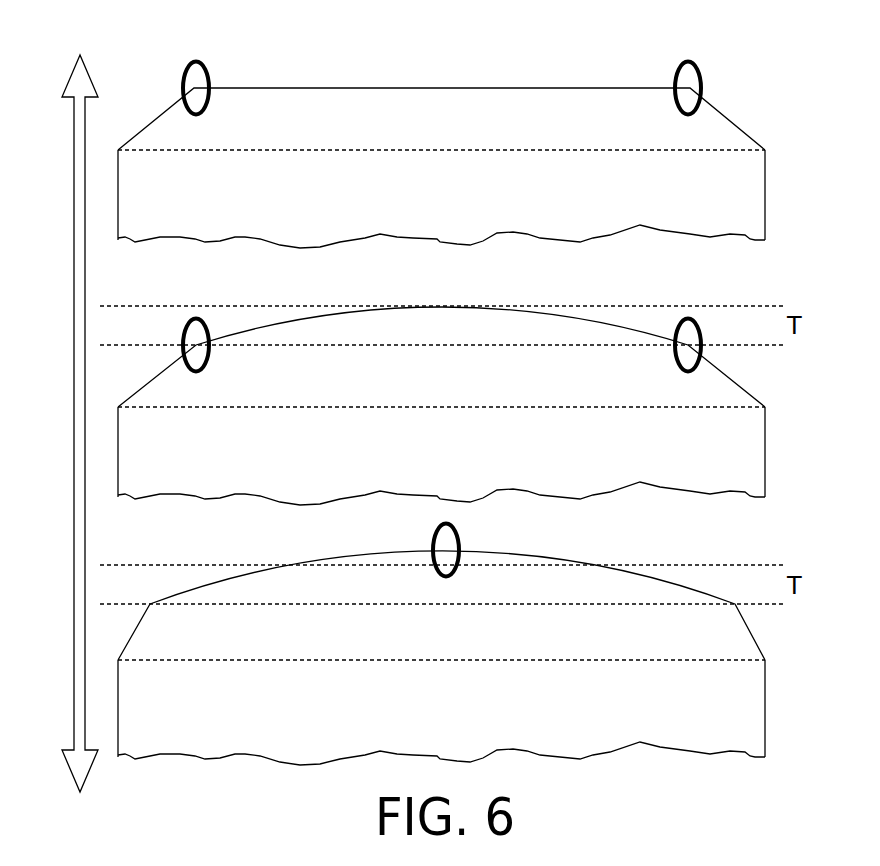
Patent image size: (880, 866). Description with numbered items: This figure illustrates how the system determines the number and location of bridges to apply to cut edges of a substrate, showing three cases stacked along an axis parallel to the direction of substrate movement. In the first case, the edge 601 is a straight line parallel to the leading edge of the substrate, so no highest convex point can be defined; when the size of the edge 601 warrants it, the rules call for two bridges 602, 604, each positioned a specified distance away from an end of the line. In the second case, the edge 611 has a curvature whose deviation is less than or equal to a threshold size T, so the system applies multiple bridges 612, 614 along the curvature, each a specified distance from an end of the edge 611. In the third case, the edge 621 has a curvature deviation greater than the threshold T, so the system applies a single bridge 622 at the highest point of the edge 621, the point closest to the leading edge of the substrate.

The edge 601 is at (441, 87).
The bridge 602 is at (196, 61).
The bridge 604 is at (688, 61).
The edge 611 is at (447, 306).
The bridge 612 is at (196, 318).
The bridge 614 is at (688, 318).
The edge 621 is at (228, 578).
The bridge 622 is at (460, 535).